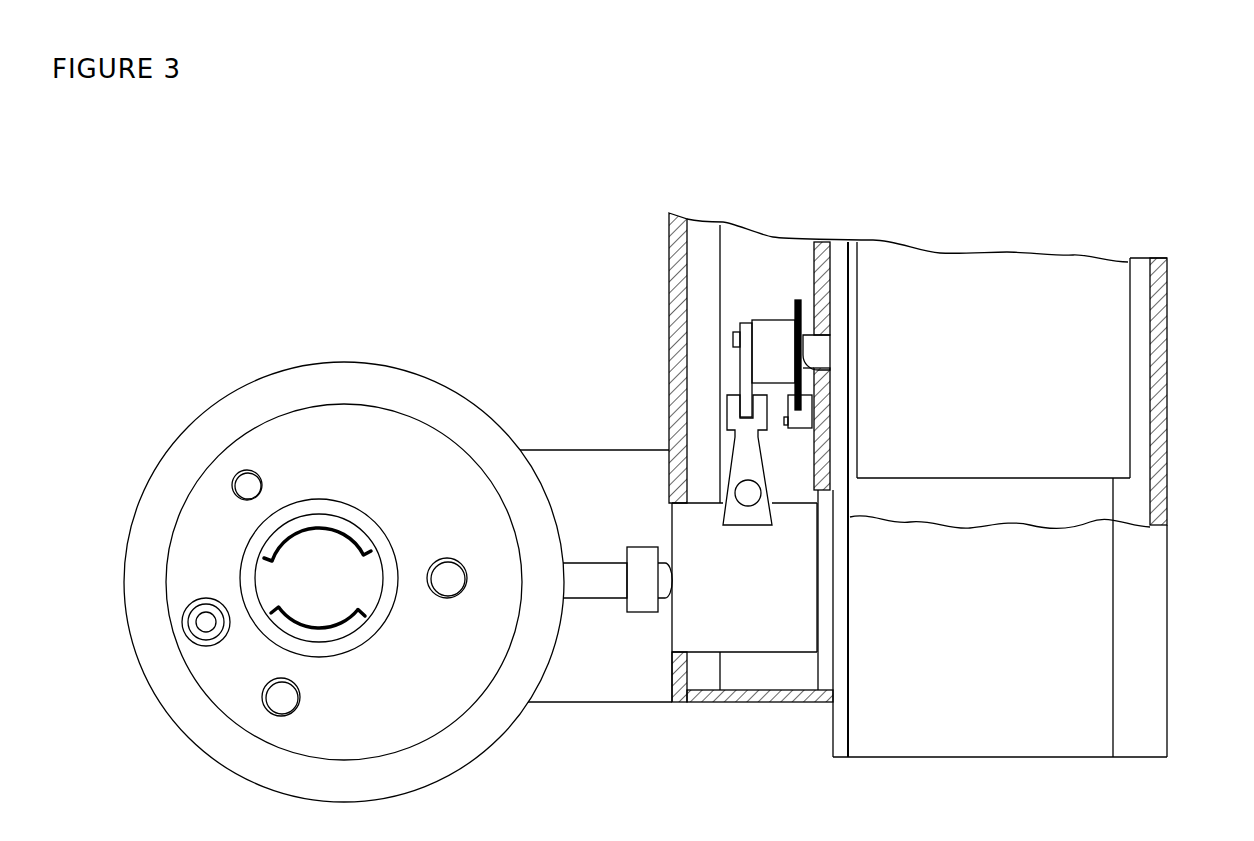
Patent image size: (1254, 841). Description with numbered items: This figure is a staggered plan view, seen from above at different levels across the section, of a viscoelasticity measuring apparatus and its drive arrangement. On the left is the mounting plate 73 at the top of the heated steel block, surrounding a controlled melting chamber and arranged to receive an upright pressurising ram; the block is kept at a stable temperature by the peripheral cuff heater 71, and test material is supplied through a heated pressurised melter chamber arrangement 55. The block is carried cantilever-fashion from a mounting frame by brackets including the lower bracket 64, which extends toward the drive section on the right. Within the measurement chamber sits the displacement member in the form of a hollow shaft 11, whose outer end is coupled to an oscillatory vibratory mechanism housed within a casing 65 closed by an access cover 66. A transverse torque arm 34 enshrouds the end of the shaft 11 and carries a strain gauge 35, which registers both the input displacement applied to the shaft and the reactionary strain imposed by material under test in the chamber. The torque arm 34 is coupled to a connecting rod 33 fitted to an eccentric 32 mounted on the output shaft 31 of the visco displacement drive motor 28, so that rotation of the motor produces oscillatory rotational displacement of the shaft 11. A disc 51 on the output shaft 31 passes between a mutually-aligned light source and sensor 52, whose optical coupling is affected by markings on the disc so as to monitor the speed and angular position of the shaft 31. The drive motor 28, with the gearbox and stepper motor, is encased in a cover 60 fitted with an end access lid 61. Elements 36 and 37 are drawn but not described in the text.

The hollow shaft 11 is at (597, 578).
The displacement drive motor 28 is at (1093, 422).
The output shaft 31 is at (822, 352).
The eccentric 32 is at (780, 332).
The connecting rod 33 is at (747, 327).
The torque arm 34 is at (747, 458).
The strain gauge 35 is at (750, 490).
The housing block 36 is at (742, 625).
The coupling 37 is at (647, 598).
The disc 51 is at (827, 363).
The light source and sensor 52 is at (802, 417).
The pressurised melter chamber arrangement 55 is at (293, 566).
The cover 60 is at (964, 723).
The end access lid 61 is at (1145, 687).
The lower bracket 64 is at (565, 483).
The casing 65 is at (798, 695).
The access cover 66 is at (692, 697).
The cuff heater 71 is at (434, 405).
The mounting plate 73 is at (298, 440).